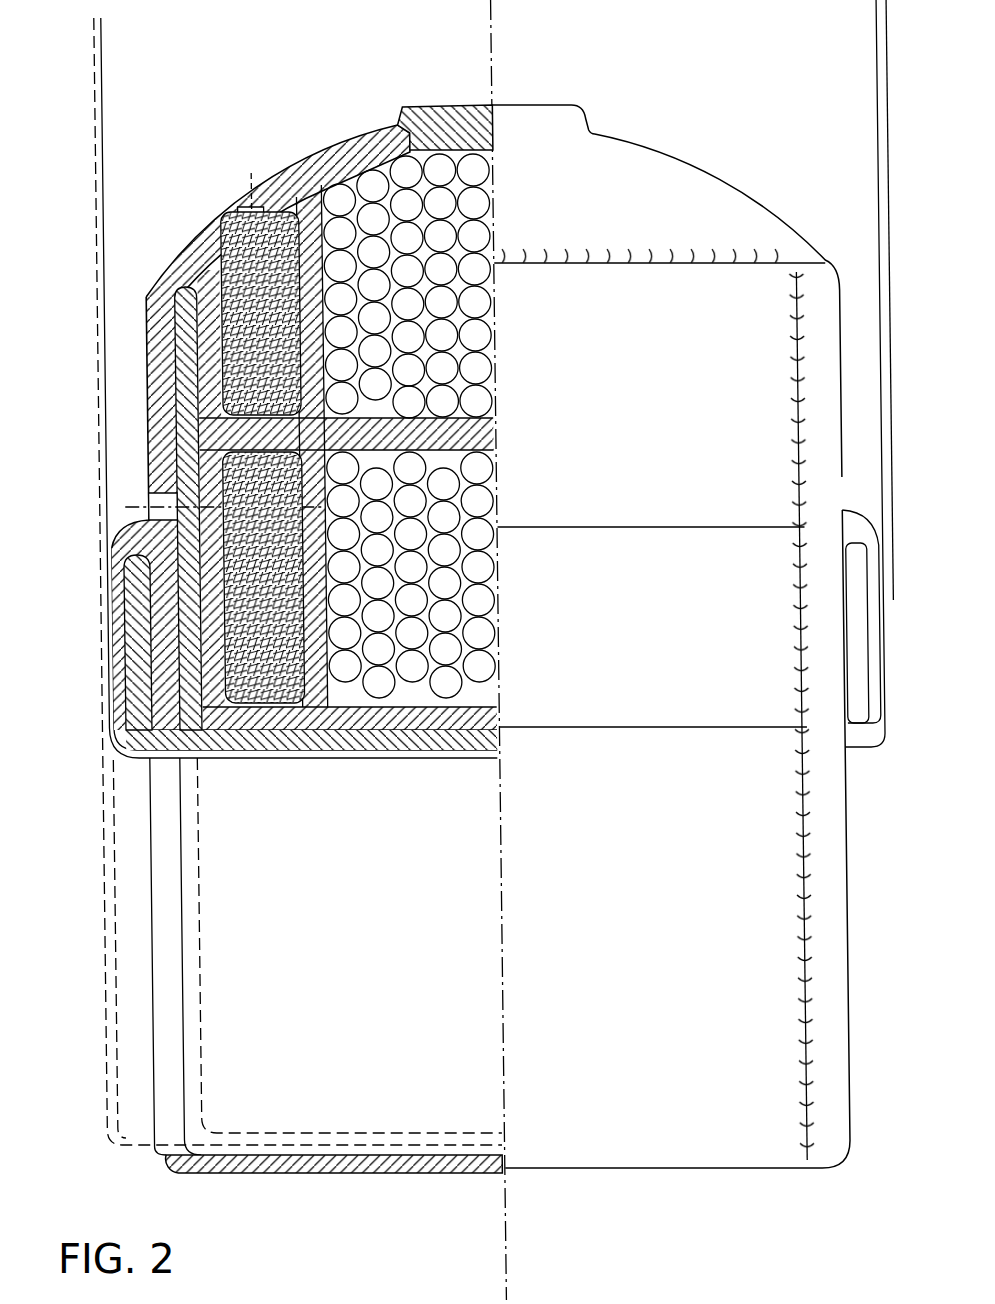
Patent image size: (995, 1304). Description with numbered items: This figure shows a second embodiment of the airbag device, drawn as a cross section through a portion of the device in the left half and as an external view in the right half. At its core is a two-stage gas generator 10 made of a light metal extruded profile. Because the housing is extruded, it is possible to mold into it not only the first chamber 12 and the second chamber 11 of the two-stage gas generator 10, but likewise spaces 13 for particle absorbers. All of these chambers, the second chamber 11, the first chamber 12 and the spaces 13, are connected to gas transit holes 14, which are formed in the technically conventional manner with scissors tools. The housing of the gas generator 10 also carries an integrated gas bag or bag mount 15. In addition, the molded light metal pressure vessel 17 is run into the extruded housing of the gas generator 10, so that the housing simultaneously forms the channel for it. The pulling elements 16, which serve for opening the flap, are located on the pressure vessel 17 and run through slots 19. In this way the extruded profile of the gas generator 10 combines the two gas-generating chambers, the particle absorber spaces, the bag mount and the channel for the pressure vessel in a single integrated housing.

The two-stage gas generator 10 is at (336, 190).
The second chamber 11 is at (441, 183).
The first chamber 12 is at (447, 621).
The spaces for particle absorbers 13 is at (277, 347).
The gas transit holes 14 is at (245, 212).
The gas bag or bag mount 15 is at (143, 697).
The pulling elements 16 is at (100, 155).
The molded light metal pressure vessel 17 is at (242, 742).
The slots 19 is at (163, 803).